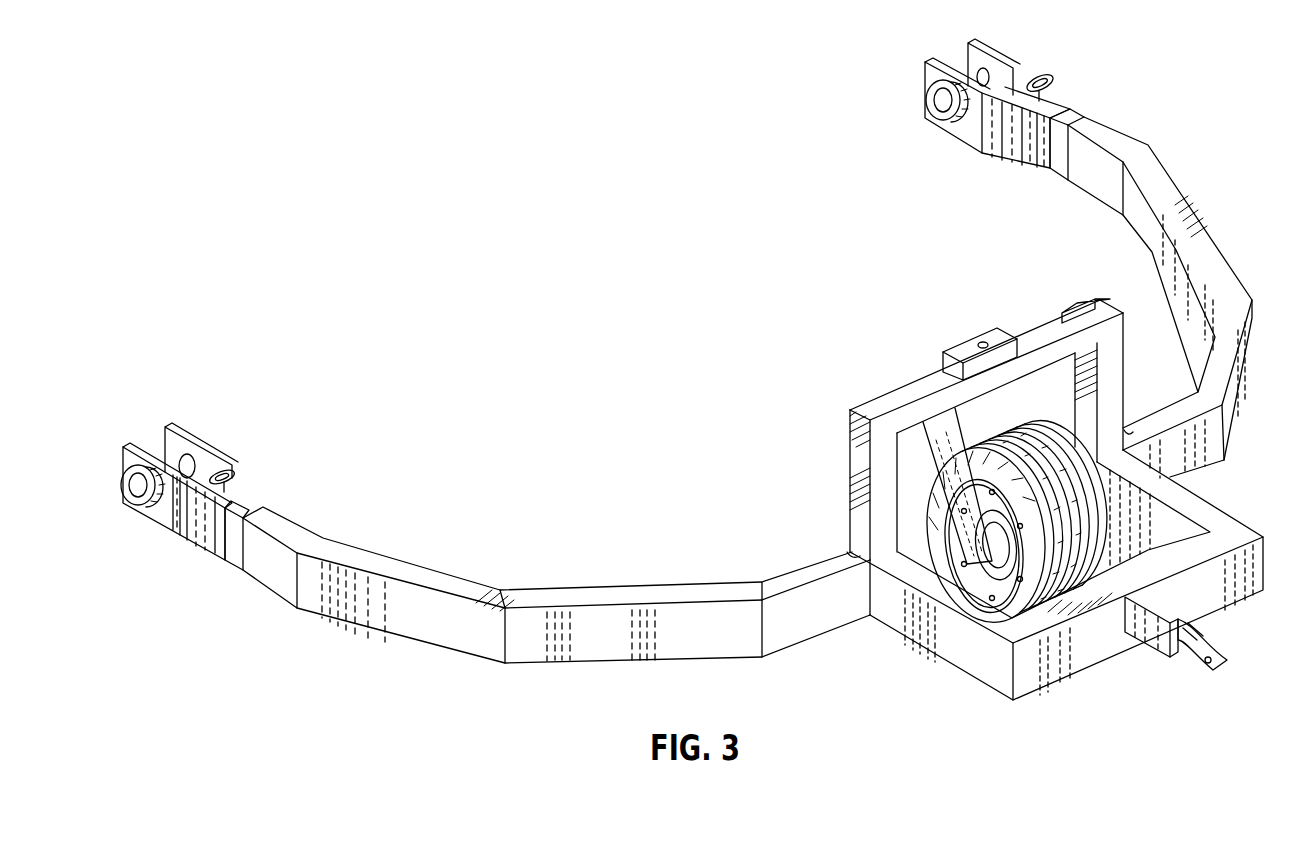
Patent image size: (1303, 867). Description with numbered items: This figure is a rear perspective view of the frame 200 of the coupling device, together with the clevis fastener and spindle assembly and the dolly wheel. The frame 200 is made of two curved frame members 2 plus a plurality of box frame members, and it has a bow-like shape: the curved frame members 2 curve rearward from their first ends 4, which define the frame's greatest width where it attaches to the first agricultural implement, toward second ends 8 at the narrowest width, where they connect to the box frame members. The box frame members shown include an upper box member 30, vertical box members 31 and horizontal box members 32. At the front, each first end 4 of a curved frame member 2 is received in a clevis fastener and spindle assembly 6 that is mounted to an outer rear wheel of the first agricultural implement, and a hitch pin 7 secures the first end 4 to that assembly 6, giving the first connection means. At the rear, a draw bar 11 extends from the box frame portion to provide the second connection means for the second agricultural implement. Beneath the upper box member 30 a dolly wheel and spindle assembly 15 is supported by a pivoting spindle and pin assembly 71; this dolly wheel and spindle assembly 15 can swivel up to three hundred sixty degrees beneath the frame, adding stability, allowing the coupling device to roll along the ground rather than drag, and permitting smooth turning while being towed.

The curved frame members 2 is at (633, 647).
The first ends 4 is at (267, 505).
The clevis fastener and spindle assembly 6 is at (198, 438).
The hitch pin 7 is at (227, 460).
The second ends 8 is at (847, 552).
The draw bar 11 is at (1193, 653).
The dolly wheel and spindle assembly 15 is at (935, 445).
The upper box member 30 is at (1047, 357).
The vertical box members 31 is at (1110, 372).
The horizontal box members 32 is at (1175, 522).
The pivoting spindle and pin assembly 71 is at (985, 333).
The frame 200 is at (1138, 744).